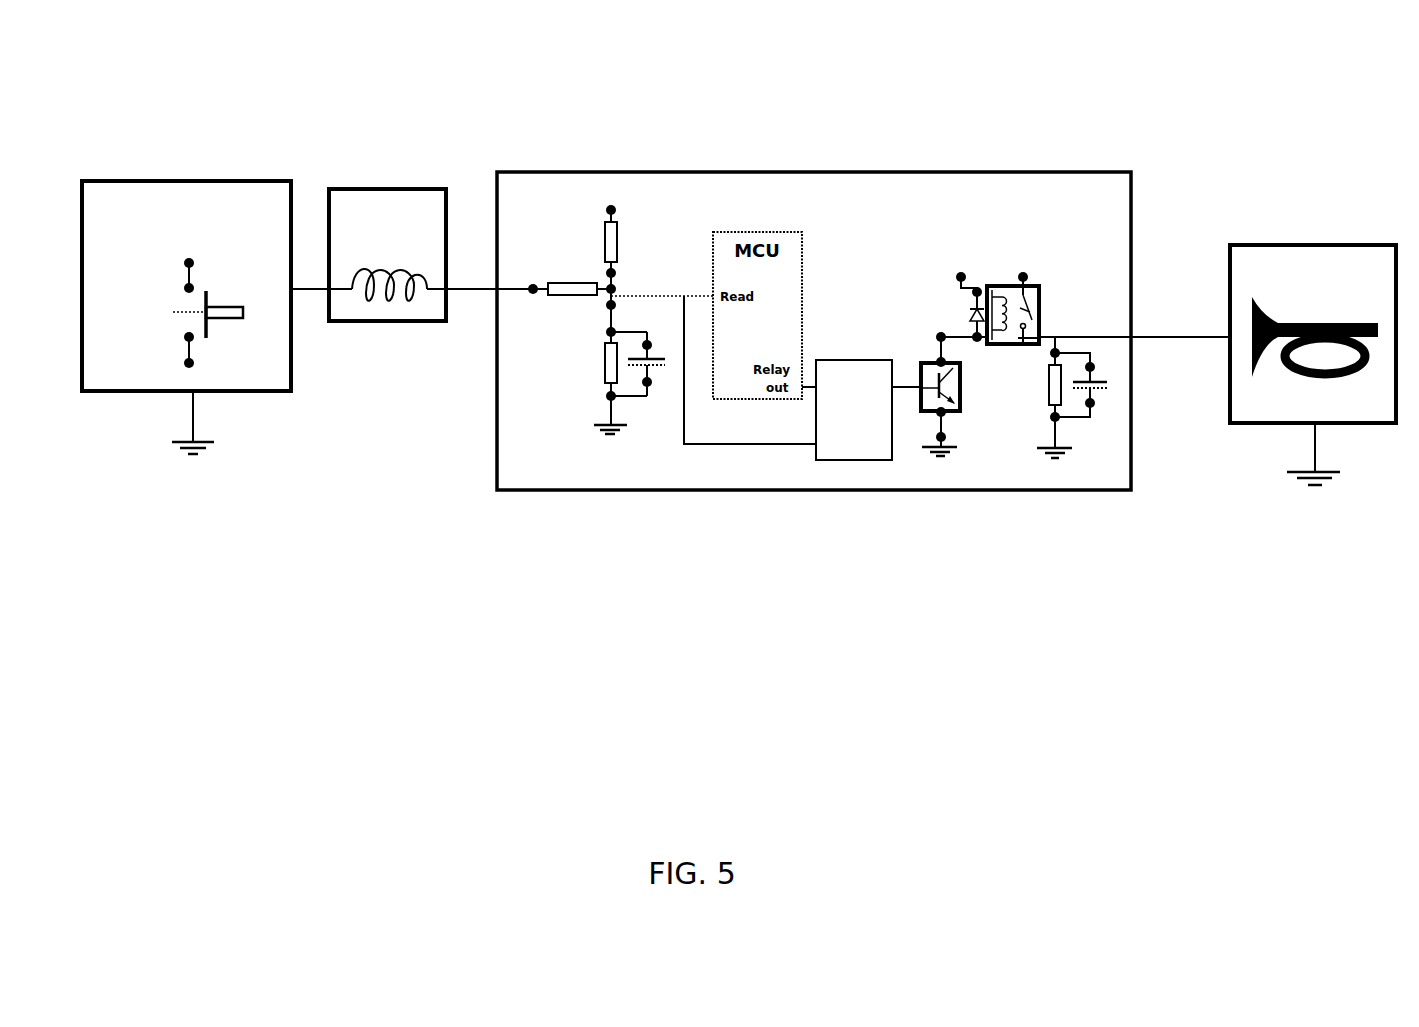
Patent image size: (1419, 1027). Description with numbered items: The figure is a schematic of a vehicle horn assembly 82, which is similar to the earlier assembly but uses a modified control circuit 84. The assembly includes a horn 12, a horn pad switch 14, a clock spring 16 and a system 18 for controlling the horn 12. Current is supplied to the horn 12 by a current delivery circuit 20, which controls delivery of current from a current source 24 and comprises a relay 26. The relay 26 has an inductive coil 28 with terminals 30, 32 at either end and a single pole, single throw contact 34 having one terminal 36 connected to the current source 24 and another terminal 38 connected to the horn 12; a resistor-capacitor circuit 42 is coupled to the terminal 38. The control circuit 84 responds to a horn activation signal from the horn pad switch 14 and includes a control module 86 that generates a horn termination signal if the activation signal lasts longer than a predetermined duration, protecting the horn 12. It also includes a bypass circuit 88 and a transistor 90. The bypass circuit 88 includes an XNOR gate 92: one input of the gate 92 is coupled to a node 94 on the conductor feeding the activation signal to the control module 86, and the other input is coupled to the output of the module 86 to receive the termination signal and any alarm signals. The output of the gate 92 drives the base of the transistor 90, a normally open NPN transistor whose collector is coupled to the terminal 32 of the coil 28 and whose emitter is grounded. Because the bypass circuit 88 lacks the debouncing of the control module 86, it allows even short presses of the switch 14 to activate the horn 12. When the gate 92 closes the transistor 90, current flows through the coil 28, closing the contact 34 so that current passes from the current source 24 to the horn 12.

The horn 12 is at (1353, 268).
The horn pad switch 14 is at (133, 200).
The clock spring 16 is at (385, 185).
The system for controlling horn 18 is at (562, 185).
The current delivery circuit 20 is at (1109, 470).
The current source 24 is at (1040, 287).
The relay 26 is at (1040, 308).
The inductive coil 28 is at (1002, 298).
The terminal 30 is at (983, 290).
The terminal 32 is at (996, 345).
The single pole, single throw contact 34 is at (1040, 320).
The terminal 36 is at (1040, 296).
The terminal 38 is at (1040, 332).
The resistor-capacitor (RC) circuit 42 is at (1078, 420).
The vehicle horn assembly 82 is at (488, 85).
The control circuit 84 is at (683, 445).
The control module 86 is at (738, 287).
The bypass circuit 88 is at (758, 458).
The transistor 90 is at (919, 407).
The XNOR gate 92 is at (843, 458).
The node 94 is at (684, 295).